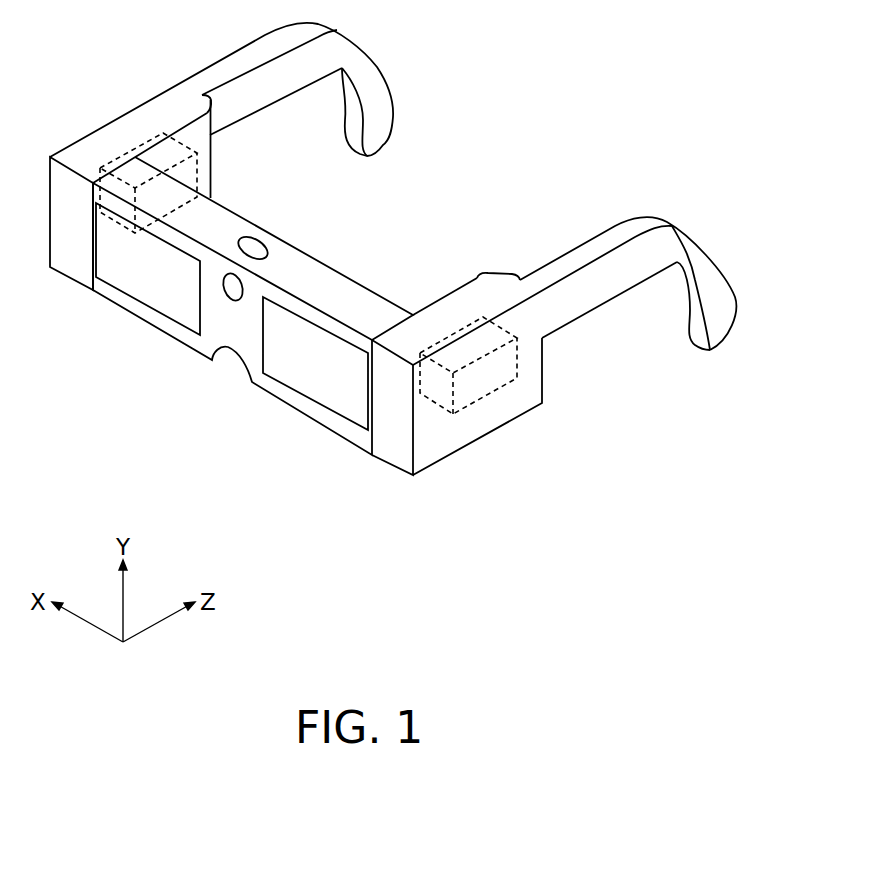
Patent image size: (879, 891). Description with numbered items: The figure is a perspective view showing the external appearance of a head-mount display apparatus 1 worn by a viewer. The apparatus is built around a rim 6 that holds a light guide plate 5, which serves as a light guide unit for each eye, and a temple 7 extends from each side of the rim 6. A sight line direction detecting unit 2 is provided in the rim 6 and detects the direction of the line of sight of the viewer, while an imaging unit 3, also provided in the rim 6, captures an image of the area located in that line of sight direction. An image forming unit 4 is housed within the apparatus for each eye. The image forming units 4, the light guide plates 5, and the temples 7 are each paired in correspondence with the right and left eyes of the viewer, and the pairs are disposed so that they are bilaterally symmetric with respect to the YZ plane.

The head-mount display apparatus 1 is at (525, 61).
The sight line direction detecting unit 2 is at (257, 247).
The imaging unit 3 is at (224, 289).
The image forming unit 4 is at (128, 153).
The light guide plate 5 is at (140, 288).
The rim 6 is at (340, 295).
The temple 7 is at (182, 82).